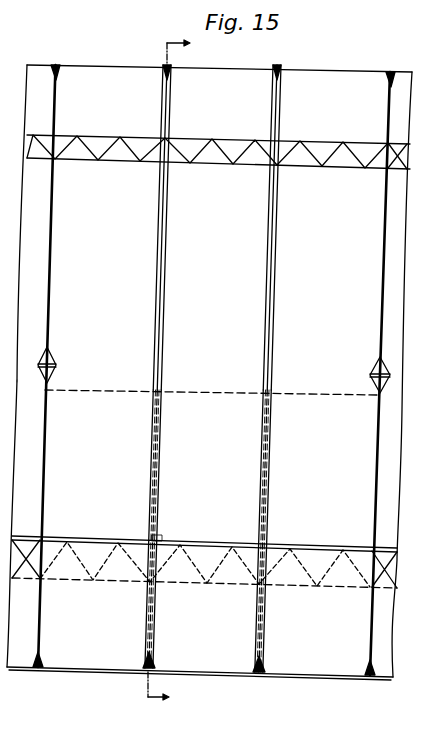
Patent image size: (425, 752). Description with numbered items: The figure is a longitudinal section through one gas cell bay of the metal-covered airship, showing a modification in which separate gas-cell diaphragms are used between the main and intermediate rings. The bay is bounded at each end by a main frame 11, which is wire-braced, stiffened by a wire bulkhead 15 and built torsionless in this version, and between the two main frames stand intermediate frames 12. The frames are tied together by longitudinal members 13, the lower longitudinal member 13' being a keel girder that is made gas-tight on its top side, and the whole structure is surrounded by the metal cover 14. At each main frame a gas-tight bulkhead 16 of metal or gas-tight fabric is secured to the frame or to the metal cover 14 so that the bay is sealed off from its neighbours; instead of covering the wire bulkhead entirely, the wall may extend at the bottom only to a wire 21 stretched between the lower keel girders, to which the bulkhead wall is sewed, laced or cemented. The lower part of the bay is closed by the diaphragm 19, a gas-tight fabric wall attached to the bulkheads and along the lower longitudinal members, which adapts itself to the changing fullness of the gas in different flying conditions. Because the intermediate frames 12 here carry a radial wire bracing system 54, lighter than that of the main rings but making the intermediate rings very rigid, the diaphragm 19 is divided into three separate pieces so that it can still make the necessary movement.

The main frame 11 is at (56, 65).
The intermediate frame 12 is at (277, 70).
The longitudinal member 13 is at (218, 145).
The lower longitudinal member 13' is at (204, 572).
The metal cover 14 is at (324, 73).
The wire bulkhead 15 is at (50, 214).
The gas-tight bulkhead 16 is at (383, 241).
The diaphragm 19 is at (221, 394).
The wire 21 is at (158, 540).
The radial wire bracing system 54 is at (165, 208).